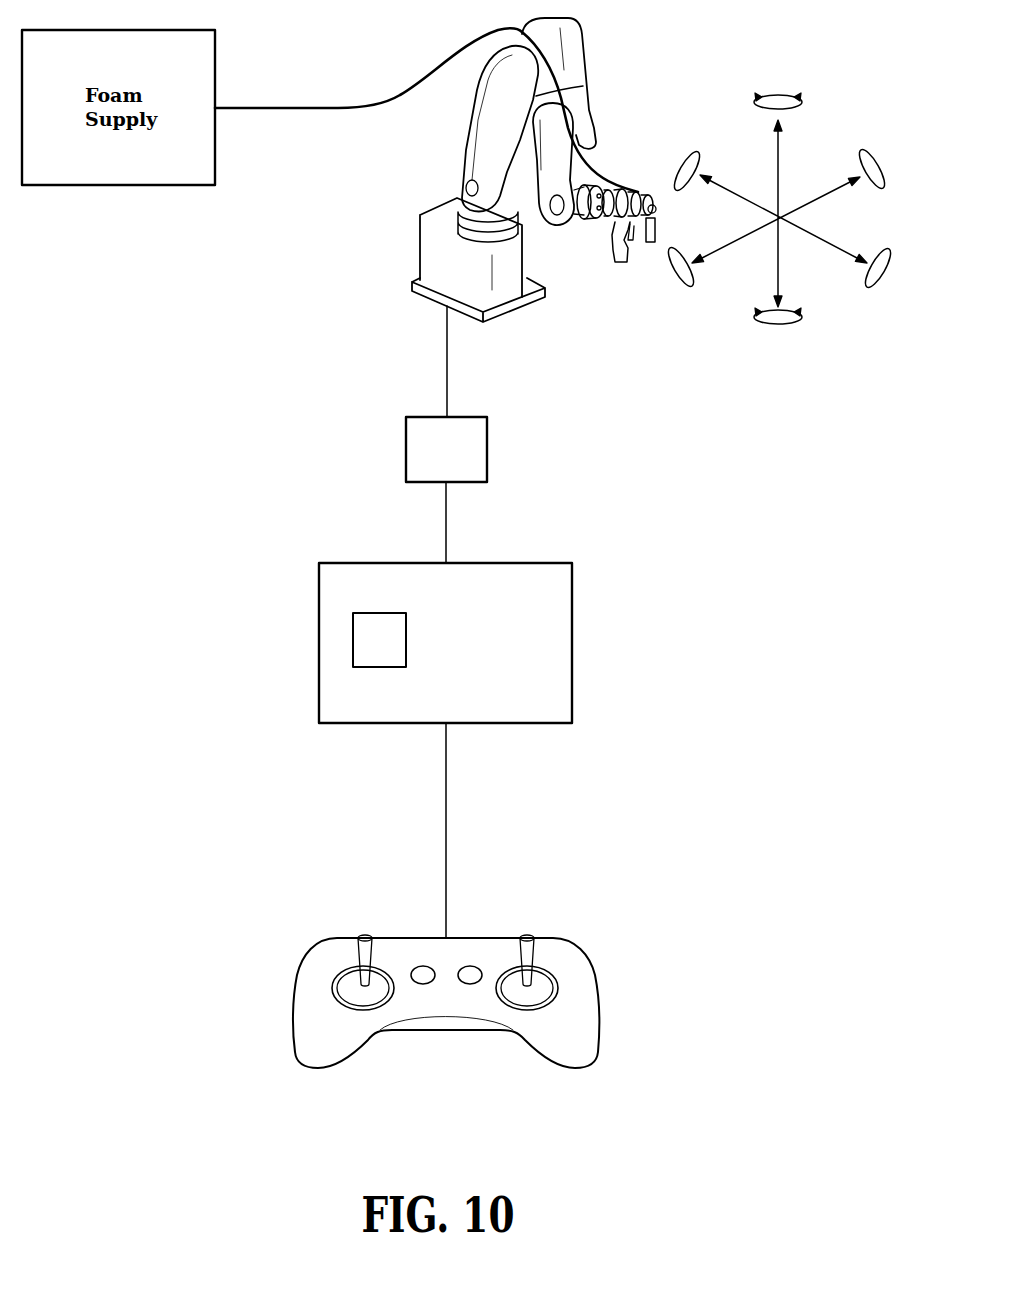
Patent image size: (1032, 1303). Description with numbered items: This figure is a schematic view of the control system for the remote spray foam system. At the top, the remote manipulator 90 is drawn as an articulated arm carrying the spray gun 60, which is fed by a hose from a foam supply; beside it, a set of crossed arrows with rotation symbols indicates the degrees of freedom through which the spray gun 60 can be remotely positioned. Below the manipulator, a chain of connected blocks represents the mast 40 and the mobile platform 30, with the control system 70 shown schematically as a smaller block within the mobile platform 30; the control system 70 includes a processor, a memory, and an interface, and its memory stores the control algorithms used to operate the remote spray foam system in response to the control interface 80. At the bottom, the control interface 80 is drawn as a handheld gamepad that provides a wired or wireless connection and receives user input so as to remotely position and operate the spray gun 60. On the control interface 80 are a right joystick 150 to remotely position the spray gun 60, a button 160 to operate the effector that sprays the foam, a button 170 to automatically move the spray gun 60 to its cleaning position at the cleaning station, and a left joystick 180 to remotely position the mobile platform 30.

The mobile platform 30 is at (627, 612).
The mast 40 is at (406, 452).
The spray gun 60 is at (832, 139).
The control system 70 is at (353, 637).
The control interface 80 is at (500, 956).
The remote manipulator 90 is at (433, 168).
The right joystick 150 is at (530, 952).
The button 160 is at (470, 966).
The button 170 is at (423, 966).
The left joystick 180 is at (360, 952).